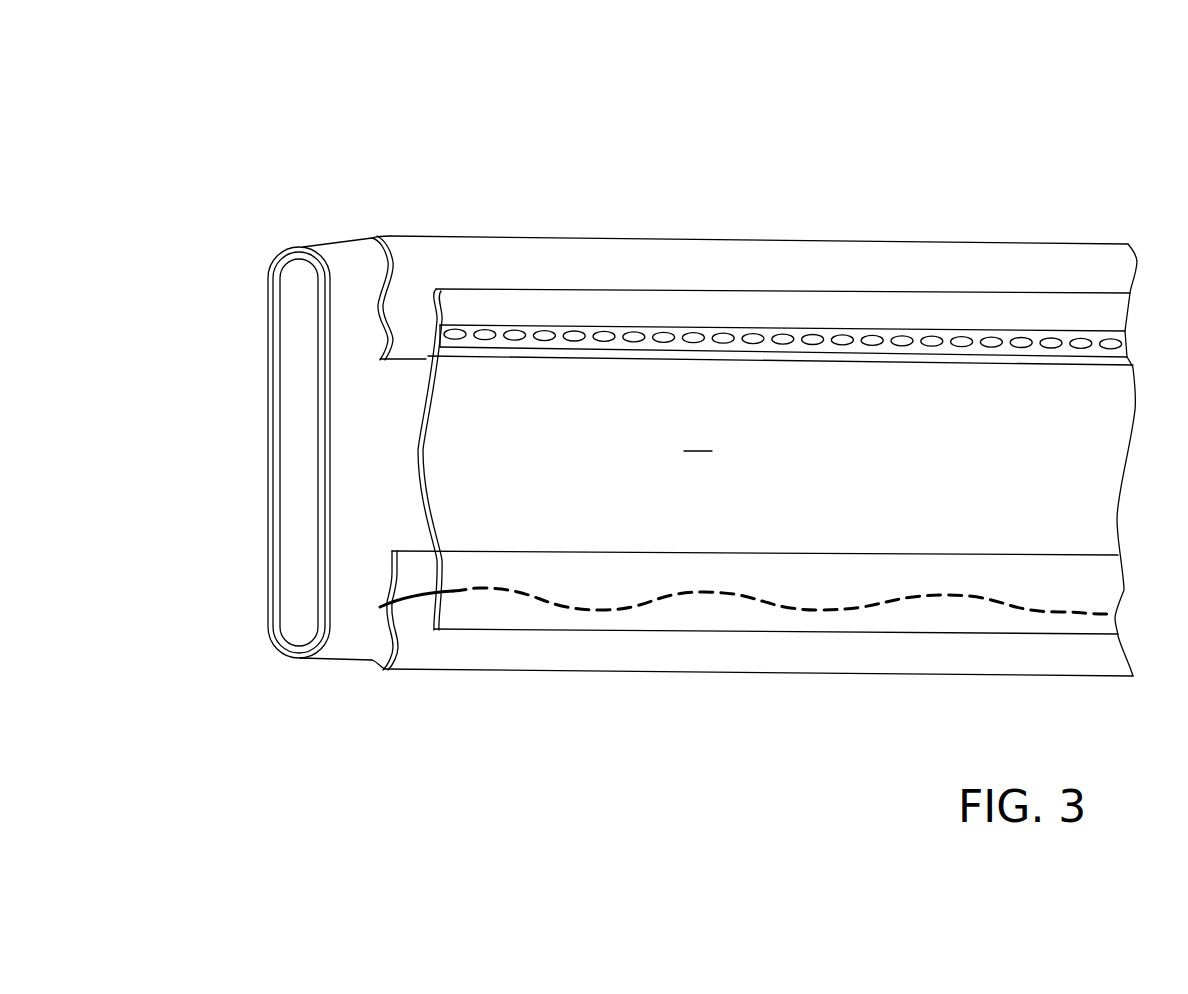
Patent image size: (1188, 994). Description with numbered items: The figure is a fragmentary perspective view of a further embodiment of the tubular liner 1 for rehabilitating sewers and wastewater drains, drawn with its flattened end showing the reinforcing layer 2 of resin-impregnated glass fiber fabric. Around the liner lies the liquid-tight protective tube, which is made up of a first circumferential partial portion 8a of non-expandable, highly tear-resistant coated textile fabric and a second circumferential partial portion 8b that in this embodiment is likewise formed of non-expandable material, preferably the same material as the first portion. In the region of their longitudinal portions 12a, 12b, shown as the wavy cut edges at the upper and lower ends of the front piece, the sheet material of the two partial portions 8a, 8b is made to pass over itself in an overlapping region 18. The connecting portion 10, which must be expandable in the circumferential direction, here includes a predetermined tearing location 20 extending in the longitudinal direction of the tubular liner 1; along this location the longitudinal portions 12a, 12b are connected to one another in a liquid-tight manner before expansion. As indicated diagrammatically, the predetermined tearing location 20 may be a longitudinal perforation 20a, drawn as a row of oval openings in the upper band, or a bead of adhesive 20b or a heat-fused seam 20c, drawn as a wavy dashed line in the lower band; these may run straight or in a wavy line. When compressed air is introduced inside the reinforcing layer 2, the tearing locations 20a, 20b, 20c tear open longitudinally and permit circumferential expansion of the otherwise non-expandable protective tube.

The tubular liner 1 is at (385, 162).
The reinforcing layer 2 is at (278, 455).
The first partial portion 8a is at (430, 262).
The second partial portion 8b is at (775, 461).
The connecting portion 10 is at (578, 325).
The longitudinal portion 12a is at (405, 330).
The longitudinal portion 12b is at (415, 570).
The overlapping region 18 is at (1027, 307).
The predetermined tearing location 20 is at (862, 330).
The longitudinal perforation 20a is at (760, 342).
The bead of adhesive 20b is at (780, 715).
The heat-fused seam 20c is at (958, 583).